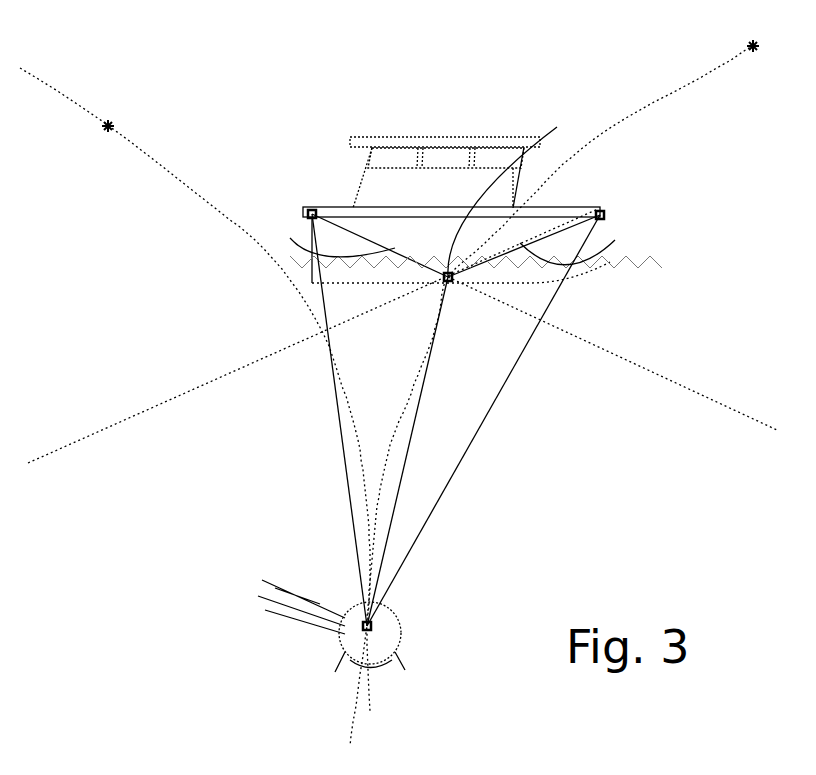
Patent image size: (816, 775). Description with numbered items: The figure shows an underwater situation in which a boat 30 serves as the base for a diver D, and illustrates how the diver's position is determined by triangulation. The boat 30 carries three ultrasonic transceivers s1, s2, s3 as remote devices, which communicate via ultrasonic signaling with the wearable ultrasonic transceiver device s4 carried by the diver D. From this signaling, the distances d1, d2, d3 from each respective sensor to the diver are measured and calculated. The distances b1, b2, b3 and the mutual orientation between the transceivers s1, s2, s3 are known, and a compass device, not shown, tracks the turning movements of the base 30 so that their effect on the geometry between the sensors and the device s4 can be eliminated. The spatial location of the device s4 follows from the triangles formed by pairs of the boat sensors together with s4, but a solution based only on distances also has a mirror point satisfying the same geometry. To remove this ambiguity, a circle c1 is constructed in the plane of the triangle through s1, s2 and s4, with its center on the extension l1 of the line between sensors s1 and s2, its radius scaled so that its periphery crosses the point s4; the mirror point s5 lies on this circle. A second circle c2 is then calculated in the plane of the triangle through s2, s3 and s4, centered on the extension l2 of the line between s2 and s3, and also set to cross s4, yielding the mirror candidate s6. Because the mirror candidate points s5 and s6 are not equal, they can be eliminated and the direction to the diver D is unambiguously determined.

The boat 30 is at (403, 137).
The ultrasonic transceiver s1 is at (314, 189).
The ultrasonic transceiver s2 is at (458, 250).
The ultrasonic transceiver s3 is at (612, 190).
The wearable ultrasonic transceiver device s4 is at (390, 631).
The mirror point s5 is at (767, 69).
The mirror candidate point s6 is at (113, 103).
The diver D is at (328, 634).
The distance d1 is at (346, 420).
The distance d2 is at (416, 451).
The distance d3 is at (483, 420).
The extension of the line between sensors s1 and s2 l1 is at (612, 353).
The extension of the line between s2 and s3 l2 is at (313, 336).
The distance b1 is at (320, 233).
The distance b2 is at (510, 180).
The distance b3 is at (587, 240).
The circle c1 is at (586, 140).
The circle c2 is at (213, 212).